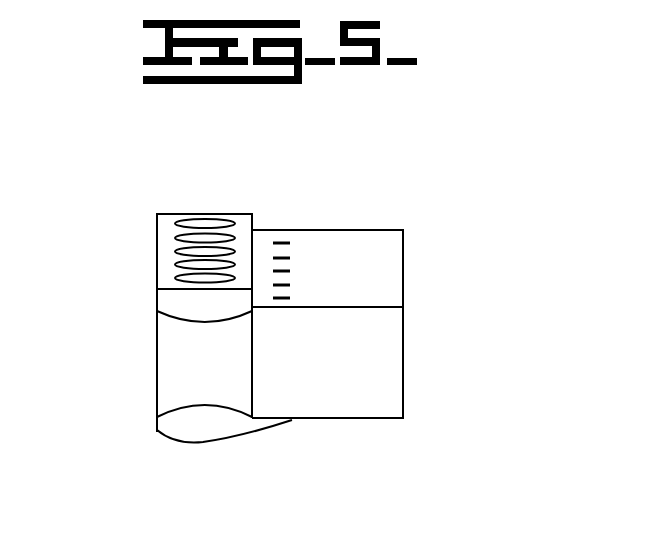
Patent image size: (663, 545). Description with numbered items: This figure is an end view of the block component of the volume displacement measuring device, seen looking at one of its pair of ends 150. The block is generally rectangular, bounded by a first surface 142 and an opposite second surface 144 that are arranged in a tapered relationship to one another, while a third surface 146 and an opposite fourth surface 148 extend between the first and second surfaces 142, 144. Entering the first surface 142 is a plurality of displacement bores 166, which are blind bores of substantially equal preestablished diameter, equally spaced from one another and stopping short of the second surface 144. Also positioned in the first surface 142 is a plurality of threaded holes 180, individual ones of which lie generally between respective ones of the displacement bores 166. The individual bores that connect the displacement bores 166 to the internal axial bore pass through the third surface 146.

The first surface 142 is at (172, 214).
The displacement bores 166 is at (180, 235).
The fourth surface 148 is at (157, 329).
The second surface 144 is at (176, 441).
The third surface 146 is at (403, 327).
The ends 150 is at (365, 366).
The threaded holes 180 is at (290, 258).